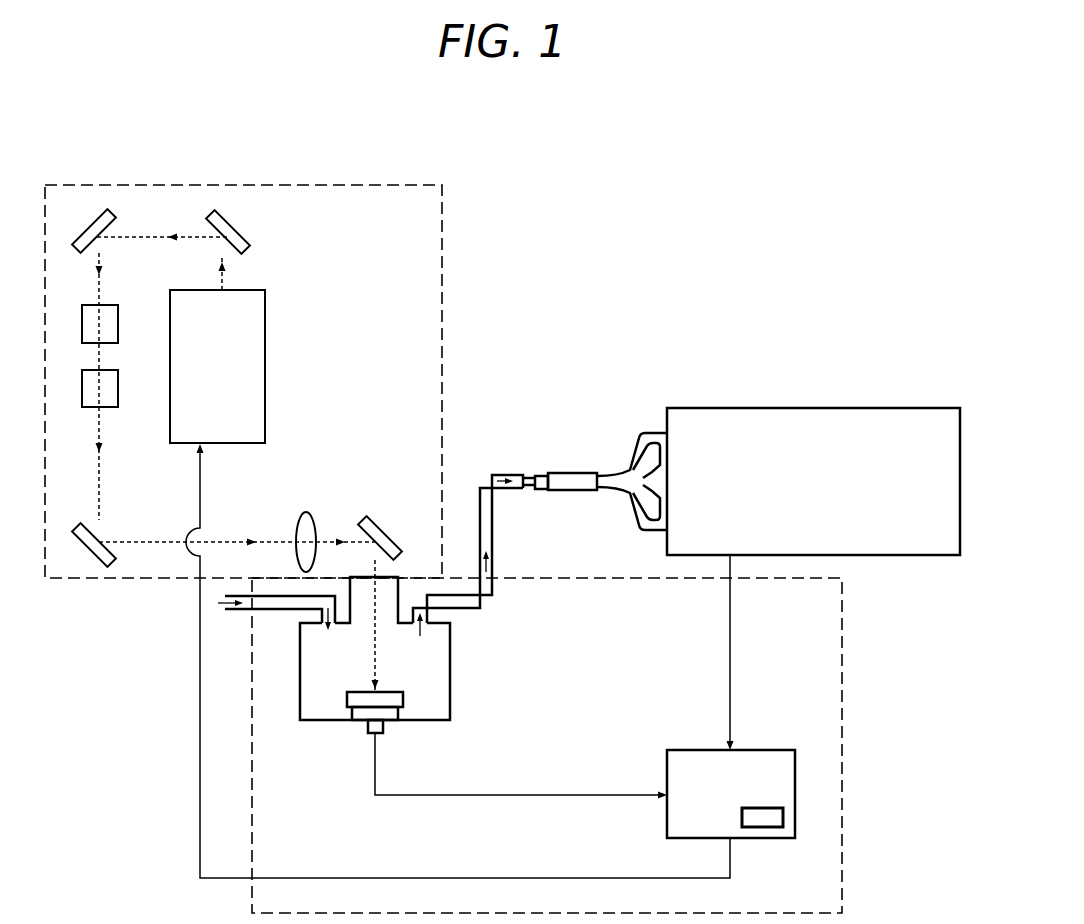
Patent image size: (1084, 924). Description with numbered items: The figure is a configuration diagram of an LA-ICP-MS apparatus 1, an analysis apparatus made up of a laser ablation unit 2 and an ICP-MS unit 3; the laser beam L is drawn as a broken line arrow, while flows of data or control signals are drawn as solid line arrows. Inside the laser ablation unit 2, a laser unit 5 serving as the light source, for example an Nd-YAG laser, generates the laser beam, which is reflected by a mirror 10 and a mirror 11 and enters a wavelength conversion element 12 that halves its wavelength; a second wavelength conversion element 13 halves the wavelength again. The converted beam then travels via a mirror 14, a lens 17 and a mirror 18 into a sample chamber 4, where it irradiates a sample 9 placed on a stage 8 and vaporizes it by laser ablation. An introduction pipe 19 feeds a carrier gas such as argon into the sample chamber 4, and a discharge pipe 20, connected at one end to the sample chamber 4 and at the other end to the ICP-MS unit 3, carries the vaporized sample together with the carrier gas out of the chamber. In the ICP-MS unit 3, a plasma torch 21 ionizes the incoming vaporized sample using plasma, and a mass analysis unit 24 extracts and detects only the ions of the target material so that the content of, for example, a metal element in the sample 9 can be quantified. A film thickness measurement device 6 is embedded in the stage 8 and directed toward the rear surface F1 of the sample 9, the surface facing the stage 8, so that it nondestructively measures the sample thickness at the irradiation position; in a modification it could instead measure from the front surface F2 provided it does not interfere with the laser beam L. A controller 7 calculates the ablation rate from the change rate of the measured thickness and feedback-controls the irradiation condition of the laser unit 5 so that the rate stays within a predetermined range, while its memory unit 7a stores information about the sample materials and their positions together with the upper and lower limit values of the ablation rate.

The LA-ICP-MS apparatus 1 is at (698, 172).
The laser ablation unit 2 is at (343, 172).
The ICP-MS unit 3 is at (840, 394).
The sample chamber 4 is at (453, 696).
The laser unit 5 is at (266, 356).
The film thickness measurement device 6 is at (369, 724).
The controller 7 is at (766, 750).
The memory unit 7a is at (760, 809).
The stage 8 is at (350, 714).
The sample 9 is at (348, 693).
The mirror 10 is at (236, 229).
The mirror 11 is at (84, 234).
The wavelength conversion element 12 is at (118, 323).
The wavelength conversion element 13 is at (118, 388).
The mirror 14 is at (86, 527).
The lens 17 is at (306, 511).
The mirror 18 is at (388, 528).
The introduction pipe 19 is at (237, 613).
The discharge pipe 20 is at (484, 620).
The plasma torch 21 is at (575, 472).
The mass analysis unit 24 is at (713, 405).
The laser beam L is at (141, 236).
The rear surface F1 is at (394, 714).
The surface F2 is at (391, 688).